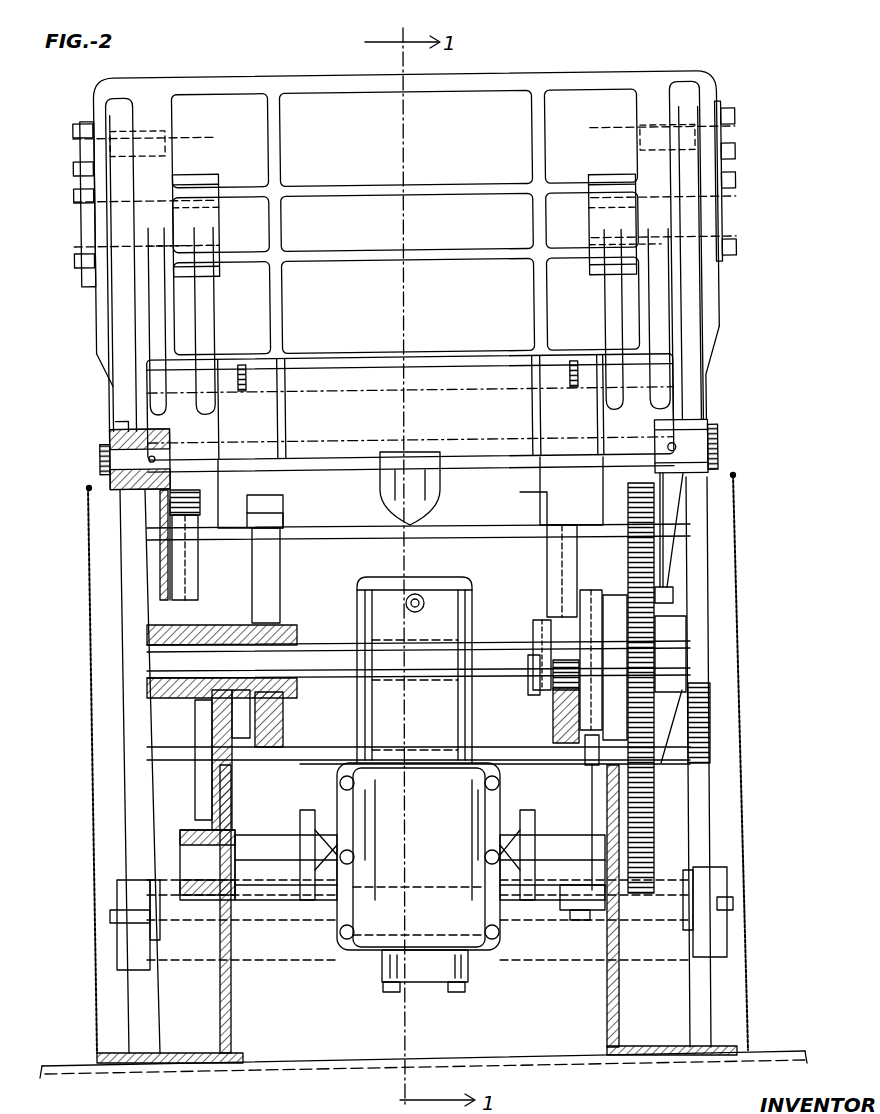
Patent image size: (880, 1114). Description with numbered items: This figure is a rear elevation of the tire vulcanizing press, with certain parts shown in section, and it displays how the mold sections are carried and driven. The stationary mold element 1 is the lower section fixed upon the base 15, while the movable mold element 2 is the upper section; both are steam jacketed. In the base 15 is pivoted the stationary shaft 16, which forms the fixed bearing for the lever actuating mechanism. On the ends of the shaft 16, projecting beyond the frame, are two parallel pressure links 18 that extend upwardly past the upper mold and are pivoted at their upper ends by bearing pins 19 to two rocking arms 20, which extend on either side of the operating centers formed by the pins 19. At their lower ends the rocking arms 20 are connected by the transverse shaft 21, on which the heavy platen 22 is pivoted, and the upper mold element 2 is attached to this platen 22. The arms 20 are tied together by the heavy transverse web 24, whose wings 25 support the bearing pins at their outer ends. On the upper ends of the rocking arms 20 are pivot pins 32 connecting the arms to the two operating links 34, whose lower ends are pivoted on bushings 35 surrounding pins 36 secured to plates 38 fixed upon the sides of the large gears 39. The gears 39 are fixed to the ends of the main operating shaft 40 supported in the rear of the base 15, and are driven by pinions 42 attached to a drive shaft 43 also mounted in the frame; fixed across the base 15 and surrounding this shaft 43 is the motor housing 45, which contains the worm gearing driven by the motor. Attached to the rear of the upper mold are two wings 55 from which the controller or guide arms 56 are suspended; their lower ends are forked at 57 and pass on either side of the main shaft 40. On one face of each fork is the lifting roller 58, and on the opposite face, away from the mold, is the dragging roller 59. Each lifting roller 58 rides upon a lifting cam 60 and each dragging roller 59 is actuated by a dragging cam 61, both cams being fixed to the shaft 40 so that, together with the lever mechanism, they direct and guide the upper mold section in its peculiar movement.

The stationary mold element 1 is at (515, 742).
The movable mold element 2 is at (465, 565).
The base 15 is at (262, 762).
The stationary shaft 16 is at (555, 915).
The pressure links 18 is at (130, 680).
The bearing pins 19 is at (185, 203).
The rocking arms 20 is at (205, 308).
The transverse shaft 21 is at (335, 388).
The platen 22 is at (445, 370).
The transverse web 24 is at (455, 110).
The wings 25 is at (100, 298).
The pivot pins 32 is at (150, 133).
The operating links 34 is at (125, 405).
The bushings 35 is at (113, 422).
The pins 36 is at (131, 456).
The plates 38 is at (160, 492).
The gears 39 is at (185, 510).
The main operating shaft 40 is at (333, 655).
The pinions 42 is at (190, 895).
The drive shaft 43 is at (195, 862).
The motor housing 45 is at (478, 948).
The wings 55 is at (275, 523).
The guide arms 56 is at (268, 570).
The forked lower ends 57 is at (275, 723).
The lifting roller 58 is at (592, 605).
The dragging roller 59 is at (540, 668).
The lifting cam 60 is at (240, 740).
The dragging cam 61 is at (295, 625).